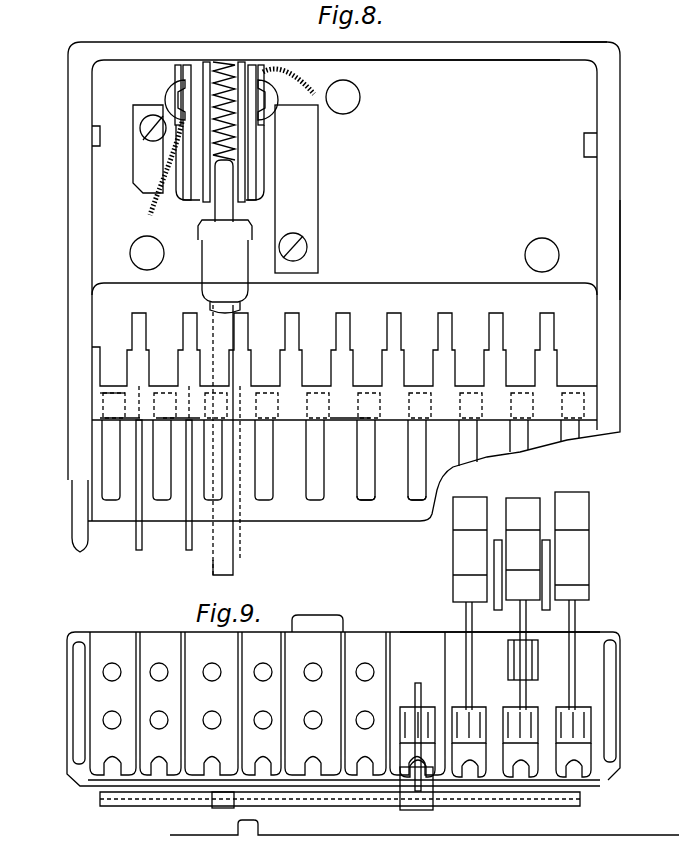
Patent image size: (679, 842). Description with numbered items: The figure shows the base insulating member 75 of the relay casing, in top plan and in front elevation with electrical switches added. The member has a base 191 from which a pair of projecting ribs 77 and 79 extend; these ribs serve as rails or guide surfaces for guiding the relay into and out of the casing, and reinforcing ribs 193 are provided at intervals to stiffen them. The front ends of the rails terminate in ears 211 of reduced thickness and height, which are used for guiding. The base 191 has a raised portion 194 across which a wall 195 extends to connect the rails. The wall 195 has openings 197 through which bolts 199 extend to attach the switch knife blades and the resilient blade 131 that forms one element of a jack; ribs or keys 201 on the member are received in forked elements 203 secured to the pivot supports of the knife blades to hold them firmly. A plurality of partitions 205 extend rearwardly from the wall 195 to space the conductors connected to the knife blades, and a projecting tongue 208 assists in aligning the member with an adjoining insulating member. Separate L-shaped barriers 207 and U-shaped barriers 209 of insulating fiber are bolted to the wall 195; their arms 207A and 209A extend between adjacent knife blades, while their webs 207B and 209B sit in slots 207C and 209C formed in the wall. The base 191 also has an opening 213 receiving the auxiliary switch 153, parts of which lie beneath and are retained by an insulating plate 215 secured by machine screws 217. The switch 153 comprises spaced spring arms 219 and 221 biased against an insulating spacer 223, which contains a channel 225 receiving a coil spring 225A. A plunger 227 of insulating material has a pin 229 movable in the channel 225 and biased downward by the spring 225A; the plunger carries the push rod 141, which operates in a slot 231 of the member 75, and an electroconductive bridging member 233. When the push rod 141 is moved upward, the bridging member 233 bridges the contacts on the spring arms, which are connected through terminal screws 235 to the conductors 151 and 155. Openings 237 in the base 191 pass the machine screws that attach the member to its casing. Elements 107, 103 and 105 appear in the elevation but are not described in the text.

In FIG. 8, the projecting rib 77 is at (67, 246).
In FIG. 9, the projecting rib 77 is at (72, 630).
In FIG. 8, the projecting rib 79 is at (621, 256).
In FIG. 9, the projecting rib 79 is at (614, 634).
In FIG. 8, the base insulating member 75 is at (570, 193).
In FIG. 9, the base insulating member 75 is at (98, 796).
In FIG. 8, the base 191 is at (477, 77).
In FIG. 8, the reinforcing rib 193 is at (97, 126).
In FIG. 8, the raised portion 194 is at (580, 318).
In FIG. 8, the wall 195 is at (576, 388).
In FIG. 8, the channel 225 is at (207, 62).
In FIG. 8, the coil spring 225A is at (231, 62).
In FIG. 8, the pin 229 is at (233, 176).
In FIG. 8, the electroconductive bridging member 233 is at (250, 232).
In FIG. 8, the auxiliary switch 153 is at (205, 275).
In FIG. 8, the plunger 227 is at (248, 294).
In FIG. 8, the push rod 141 is at (236, 564).
In FIG. 8, the spacer 223 is at (245, 142).
In FIG. 8, the spring arm 221 is at (262, 150).
In FIG. 8, the opening 213 is at (268, 188).
In FIG. 8, the terminal screw 235 is at (172, 80).
In FIG. 8, the conductor 151 is at (147, 211).
In FIG. 8, the conductor 155 is at (295, 78).
In FIG. 8, the plate 215 is at (146, 112).
In FIG. 8, the spring arm 219 is at (151, 139).
In FIG. 8, the machine screw 217 is at (142, 133).
In FIG. 8, the opening 237 is at (131, 260).
In FIG. 8, the partition 205 is at (488, 314).
In FIG. 8, the projecting tongue 208 is at (333, 388).
In FIG. 9, the projecting tongue 208 is at (338, 618).
In FIG. 8, the L-shaped barrier 207 is at (137, 552).
In FIG. 9, the L-shaped barrier 207 is at (110, 642).
In FIG. 8, the U-shaped barrier 209 is at (186, 552).
In FIG. 8, the arm 207A is at (121, 468).
In FIG. 8, the arm 209A is at (195, 473).
In FIG. 8, the web 207B is at (110, 418).
In FIG. 8, the slot 207C is at (108, 400).
In FIG. 8, the web 209B is at (192, 412).
In FIG. 8, the slot 209C is at (330, 420).
In FIG. 8, the rib or key 201 is at (412, 500).
In FIG. 9, the rib or key 201 is at (574, 778).
In FIG. 8, the ear 211 is at (72, 525).
In FIG. 9, the ear 211 is at (75, 712).
In FIG. 9, the opening 197 is at (374, 672).
In FIG. 9, the slot 231 is at (212, 806).
In FIG. 9, the terminal 107 is at (466, 622).
In FIG. 9, the resilient blade 131 is at (508, 628).
In FIG. 9, the terminal 103 is at (578, 616).
In FIG. 9, the terminal 105 is at (540, 660).
In FIG. 9, the bolt 199 is at (540, 690).
In FIG. 9, the forked element 203 is at (590, 768).